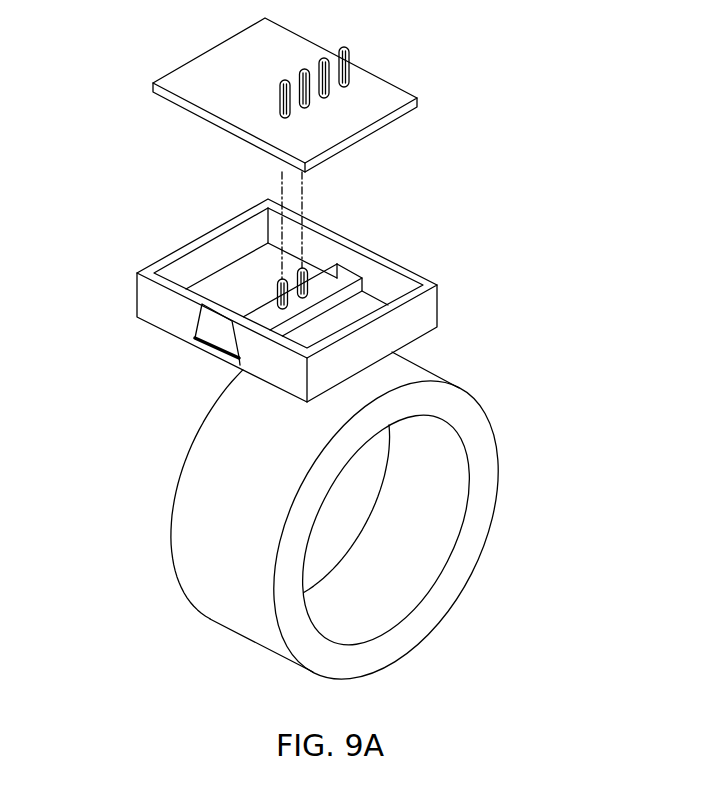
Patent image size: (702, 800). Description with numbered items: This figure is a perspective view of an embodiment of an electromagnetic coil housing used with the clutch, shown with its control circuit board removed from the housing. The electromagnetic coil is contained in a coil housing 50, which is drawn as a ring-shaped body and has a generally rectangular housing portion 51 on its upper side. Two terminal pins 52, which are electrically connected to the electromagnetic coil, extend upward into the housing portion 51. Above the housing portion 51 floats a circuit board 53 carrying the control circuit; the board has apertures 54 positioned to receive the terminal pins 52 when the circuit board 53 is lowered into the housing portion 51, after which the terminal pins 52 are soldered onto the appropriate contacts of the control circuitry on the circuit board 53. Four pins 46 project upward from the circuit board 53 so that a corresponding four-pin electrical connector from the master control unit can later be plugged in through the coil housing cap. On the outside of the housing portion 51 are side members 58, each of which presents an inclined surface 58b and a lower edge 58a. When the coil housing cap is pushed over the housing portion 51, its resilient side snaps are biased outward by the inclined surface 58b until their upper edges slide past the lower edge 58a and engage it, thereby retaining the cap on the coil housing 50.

The pins 46 is at (362, 46).
The circuit board 53 is at (357, 137).
The apertures 54 is at (298, 84).
The housing portion 51 is at (438, 302).
The terminal pins 52 is at (297, 273).
The side members 58 is at (190, 350).
The lower edge 58a is at (237, 367).
The inclined surface 58b is at (208, 328).
The coil housing 50 is at (490, 396).